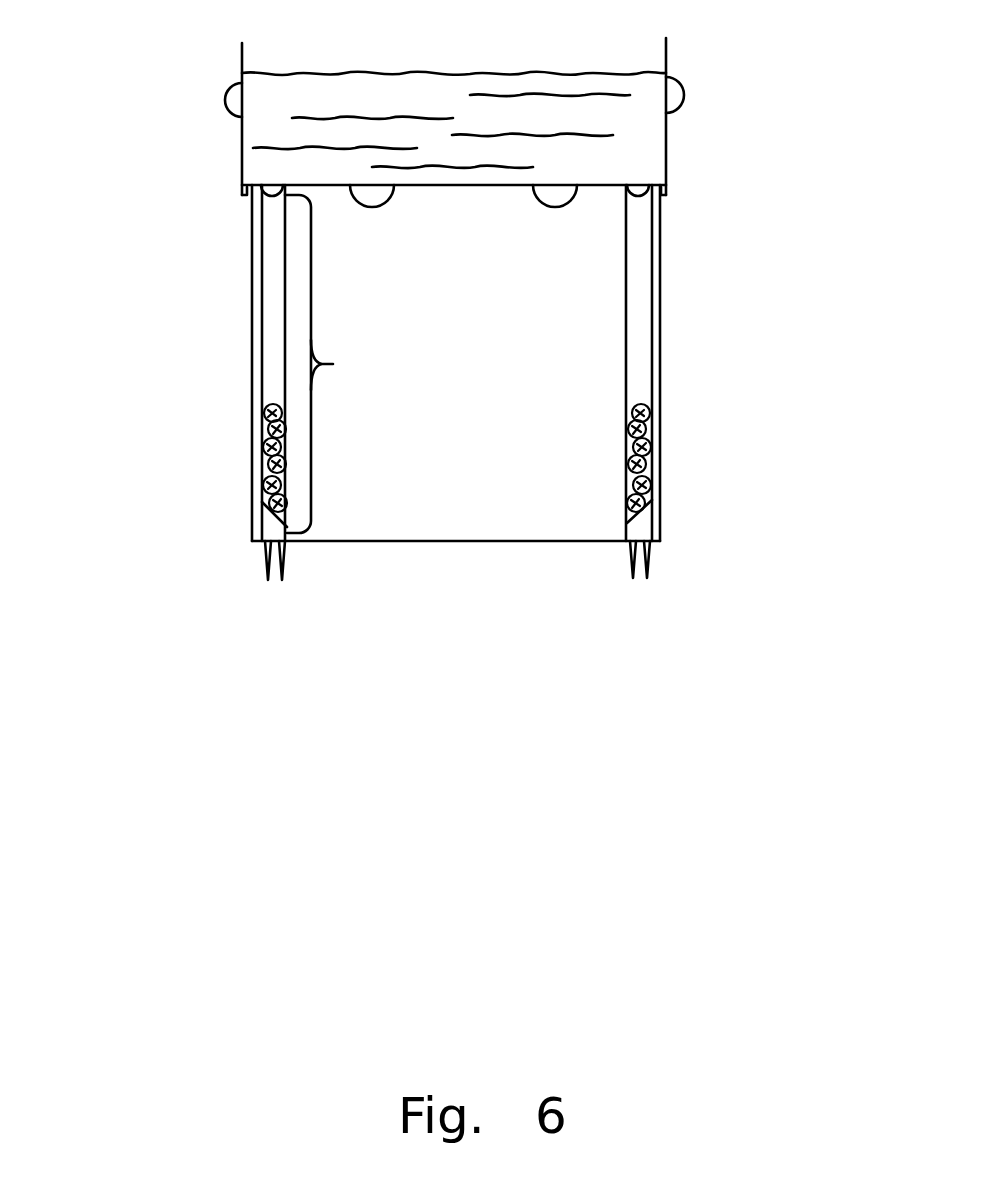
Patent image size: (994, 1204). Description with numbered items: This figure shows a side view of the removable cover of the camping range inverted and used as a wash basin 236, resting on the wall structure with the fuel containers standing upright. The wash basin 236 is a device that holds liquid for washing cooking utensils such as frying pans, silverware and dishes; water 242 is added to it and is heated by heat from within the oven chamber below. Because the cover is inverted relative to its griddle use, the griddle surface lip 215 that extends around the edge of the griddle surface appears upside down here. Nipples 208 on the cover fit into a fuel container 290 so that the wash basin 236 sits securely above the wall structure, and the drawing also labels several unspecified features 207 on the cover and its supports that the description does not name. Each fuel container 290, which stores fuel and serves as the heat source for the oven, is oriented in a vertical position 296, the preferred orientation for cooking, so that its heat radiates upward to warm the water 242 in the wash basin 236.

The water 242 is at (400, 73).
The wash basin 236 is at (667, 140).
The griddle surface lip 215 is at (667, 183).
The sealing pads 207 is at (227, 88).
The nipples 208 is at (268, 195).
The vertical position 296 is at (349, 363).
The fuel container 290 is at (277, 355).